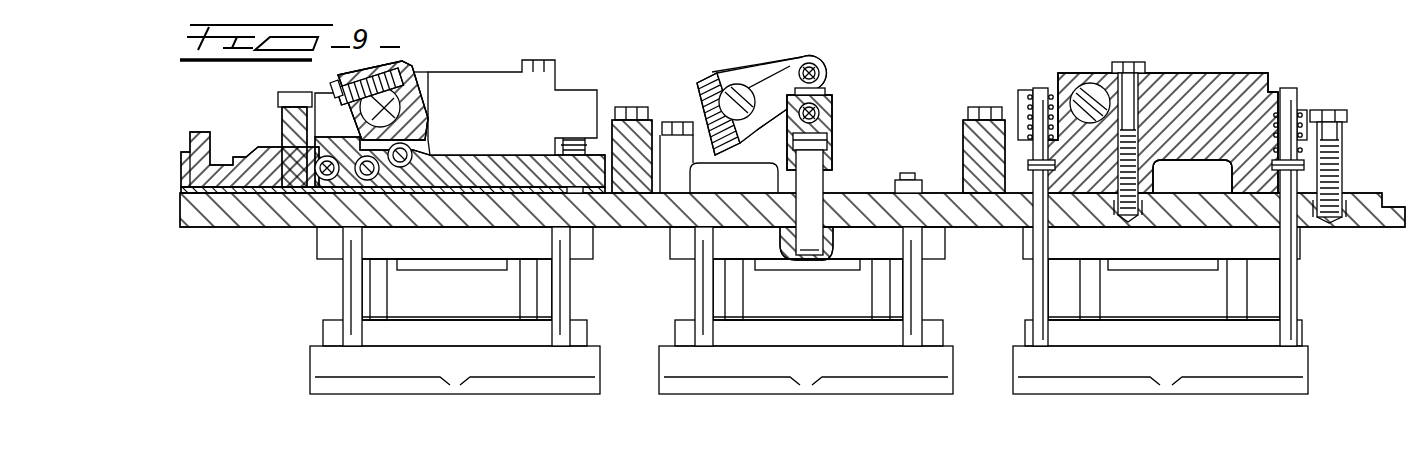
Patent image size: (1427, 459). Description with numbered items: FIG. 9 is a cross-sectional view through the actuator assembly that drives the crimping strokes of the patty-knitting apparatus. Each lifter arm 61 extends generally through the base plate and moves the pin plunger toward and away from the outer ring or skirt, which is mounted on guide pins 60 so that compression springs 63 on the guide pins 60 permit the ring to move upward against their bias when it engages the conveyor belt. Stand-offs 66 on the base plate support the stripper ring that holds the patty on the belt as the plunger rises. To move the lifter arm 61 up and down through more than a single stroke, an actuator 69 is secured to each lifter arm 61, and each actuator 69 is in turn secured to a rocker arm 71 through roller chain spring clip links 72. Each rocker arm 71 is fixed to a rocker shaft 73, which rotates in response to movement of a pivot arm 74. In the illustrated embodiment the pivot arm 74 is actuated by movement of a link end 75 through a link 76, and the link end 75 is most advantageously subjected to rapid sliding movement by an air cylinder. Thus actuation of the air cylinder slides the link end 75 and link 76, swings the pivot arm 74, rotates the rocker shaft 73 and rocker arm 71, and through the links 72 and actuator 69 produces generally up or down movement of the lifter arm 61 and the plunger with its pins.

The guide pins 60 is at (352, 296).
The lifter arm 61 is at (808, 197).
The compression springs 63 is at (1027, 118).
The stand-offs 66 is at (380, 301).
The actuator 69 is at (830, 150).
The rocker arm 71 is at (778, 78).
The roller chain spring clip links 72 is at (825, 92).
The rocker shaft 73 is at (428, 112).
The pivot arm 74 is at (408, 98).
The link end 75 is at (248, 163).
The link 76 is at (338, 180).